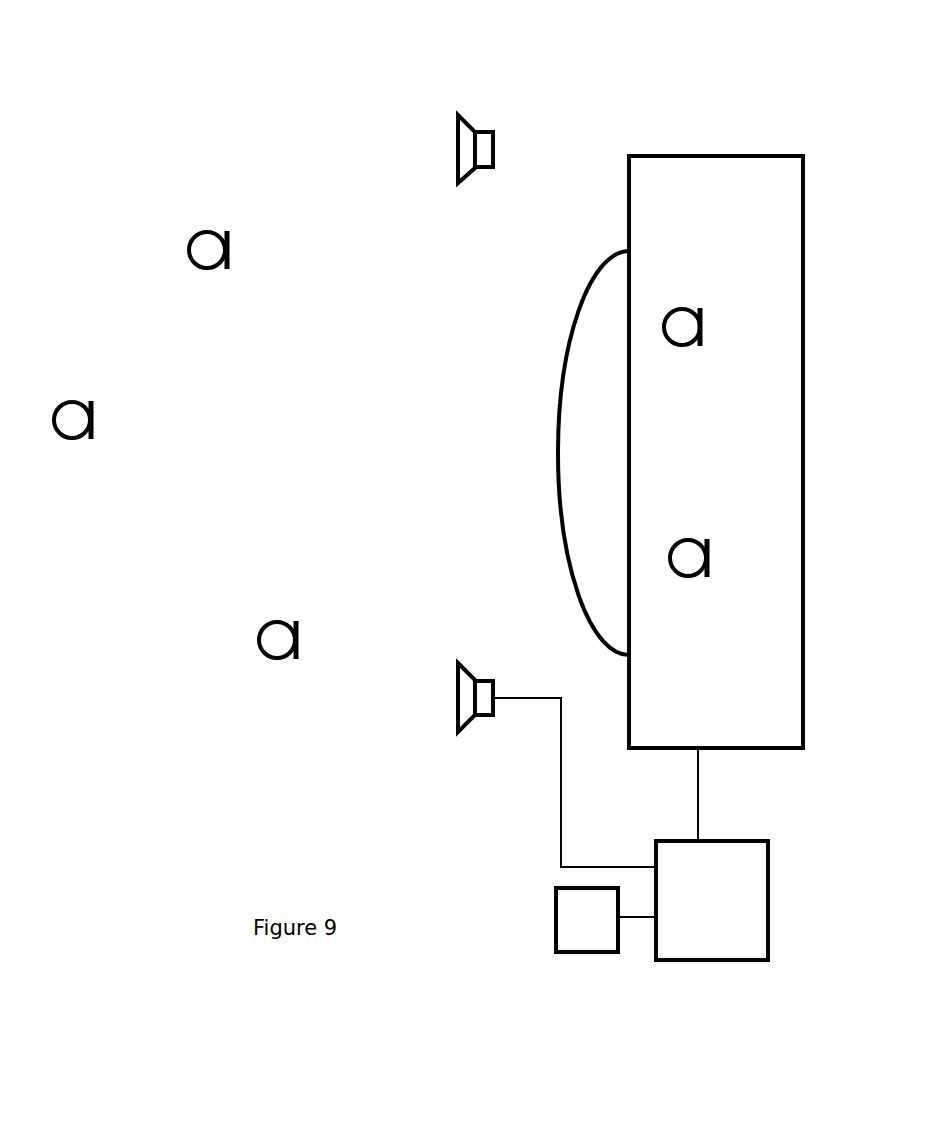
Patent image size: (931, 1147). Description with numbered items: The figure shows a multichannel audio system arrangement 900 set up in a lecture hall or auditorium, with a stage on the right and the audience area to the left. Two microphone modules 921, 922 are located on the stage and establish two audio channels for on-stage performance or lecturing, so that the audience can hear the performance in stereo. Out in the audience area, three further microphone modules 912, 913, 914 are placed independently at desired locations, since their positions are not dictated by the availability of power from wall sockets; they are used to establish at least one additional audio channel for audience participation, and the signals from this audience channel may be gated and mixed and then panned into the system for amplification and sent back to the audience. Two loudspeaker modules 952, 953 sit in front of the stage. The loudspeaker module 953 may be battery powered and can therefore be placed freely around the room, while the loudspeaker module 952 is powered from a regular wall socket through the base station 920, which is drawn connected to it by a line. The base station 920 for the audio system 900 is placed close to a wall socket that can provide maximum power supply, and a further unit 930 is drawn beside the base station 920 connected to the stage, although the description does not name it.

The multichannel audio system arrangement 900 is at (128, 58).
The microphone module 912 is at (210, 231).
The microphone module 913 is at (75, 400).
The microphone module 914 is at (278, 620).
The microphone module 921 is at (677, 307).
The microphone module 922 is at (700, 538).
The base station 920 is at (556, 925).
The processing unit 930 is at (714, 840).
The loudspeaker module 952 is at (459, 661).
The loudspeaker module 953 is at (459, 113).